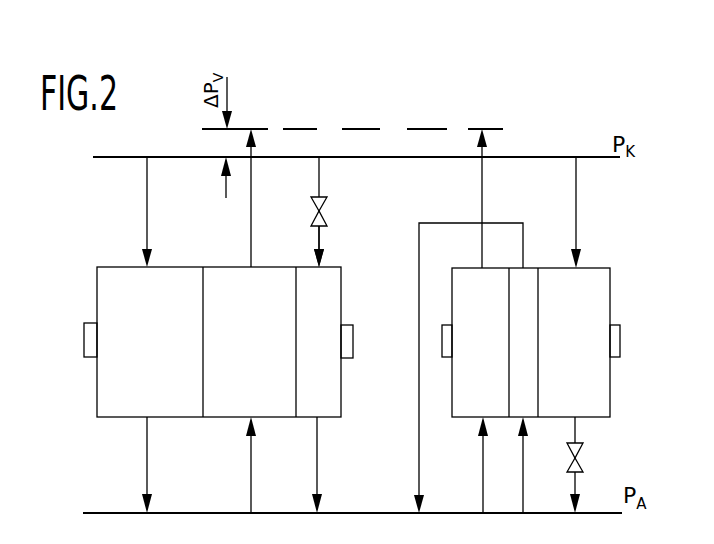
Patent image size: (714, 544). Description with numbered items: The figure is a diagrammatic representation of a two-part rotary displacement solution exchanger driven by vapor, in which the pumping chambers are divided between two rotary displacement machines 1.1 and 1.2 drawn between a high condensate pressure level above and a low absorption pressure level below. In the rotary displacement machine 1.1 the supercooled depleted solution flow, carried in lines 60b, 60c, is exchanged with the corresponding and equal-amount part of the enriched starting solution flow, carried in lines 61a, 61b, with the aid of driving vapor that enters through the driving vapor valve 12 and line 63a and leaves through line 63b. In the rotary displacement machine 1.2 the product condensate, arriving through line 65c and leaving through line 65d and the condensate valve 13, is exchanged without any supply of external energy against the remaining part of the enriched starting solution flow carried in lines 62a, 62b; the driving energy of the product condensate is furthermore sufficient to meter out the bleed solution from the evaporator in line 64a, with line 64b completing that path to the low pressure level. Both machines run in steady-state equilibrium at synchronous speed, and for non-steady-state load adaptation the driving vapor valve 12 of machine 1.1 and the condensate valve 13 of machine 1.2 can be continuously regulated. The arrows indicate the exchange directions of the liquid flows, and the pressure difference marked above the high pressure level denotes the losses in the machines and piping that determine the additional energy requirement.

The rotary displacement machine 1.1 is at (132, 368).
The rotary displacement machine 1.2 is at (585, 382).
The driving vapor valve 12 is at (327, 205).
The condensate valve 13 is at (583, 465).
The line 60b is at (147, 224).
The line 60c is at (147, 467).
The line 61a is at (251, 467).
The line 61b is at (251, 224).
The line 62a is at (483, 483).
The line 62b is at (482, 188).
The line 63a is at (319, 240).
The line 63b is at (317, 471).
The line 64a is at (523, 472).
The line 64b is at (419, 465).
The line 65c is at (576, 218).
The line 65d is at (575, 430).